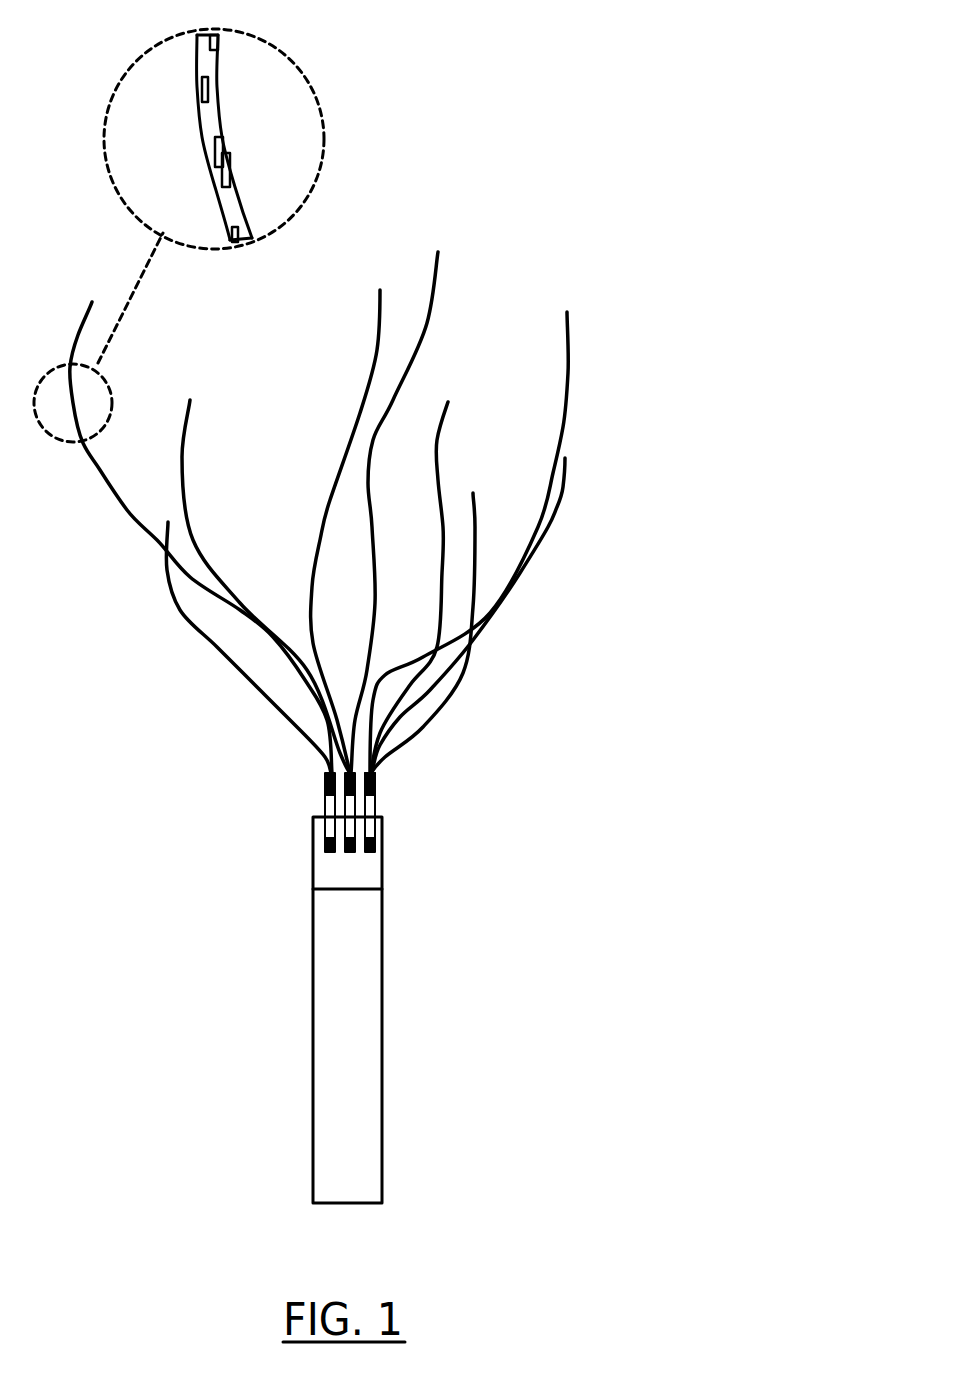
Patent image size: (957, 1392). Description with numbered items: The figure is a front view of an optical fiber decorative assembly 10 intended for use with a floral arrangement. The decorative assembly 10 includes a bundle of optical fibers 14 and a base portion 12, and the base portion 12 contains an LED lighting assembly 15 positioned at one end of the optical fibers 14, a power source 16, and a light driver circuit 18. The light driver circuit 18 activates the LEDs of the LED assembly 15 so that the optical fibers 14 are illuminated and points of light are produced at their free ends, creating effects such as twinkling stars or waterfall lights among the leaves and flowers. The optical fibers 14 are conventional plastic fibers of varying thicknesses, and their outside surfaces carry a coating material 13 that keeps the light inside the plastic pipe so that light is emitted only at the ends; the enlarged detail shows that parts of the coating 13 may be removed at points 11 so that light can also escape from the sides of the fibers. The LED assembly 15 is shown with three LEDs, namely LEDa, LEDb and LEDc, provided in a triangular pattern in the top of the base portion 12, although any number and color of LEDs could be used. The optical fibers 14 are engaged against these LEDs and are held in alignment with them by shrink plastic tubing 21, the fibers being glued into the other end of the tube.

The optical fiber decorative assembly 10 is at (558, 97).
The points 11 is at (200, 92).
The base portion 12 is at (331, 964).
The coating material 13 is at (222, 117).
The optical fibers 14 is at (428, 653).
The LED lighting assembly 15 is at (331, 800).
The power source 16 is at (372, 1052).
The light driver circuit 18 is at (343, 860).
The shrink plastic tubing 21 is at (375, 773).
The LED LEDa is at (322, 795).
The LED LEDb is at (327, 775).
The LED LEDc is at (363, 798).